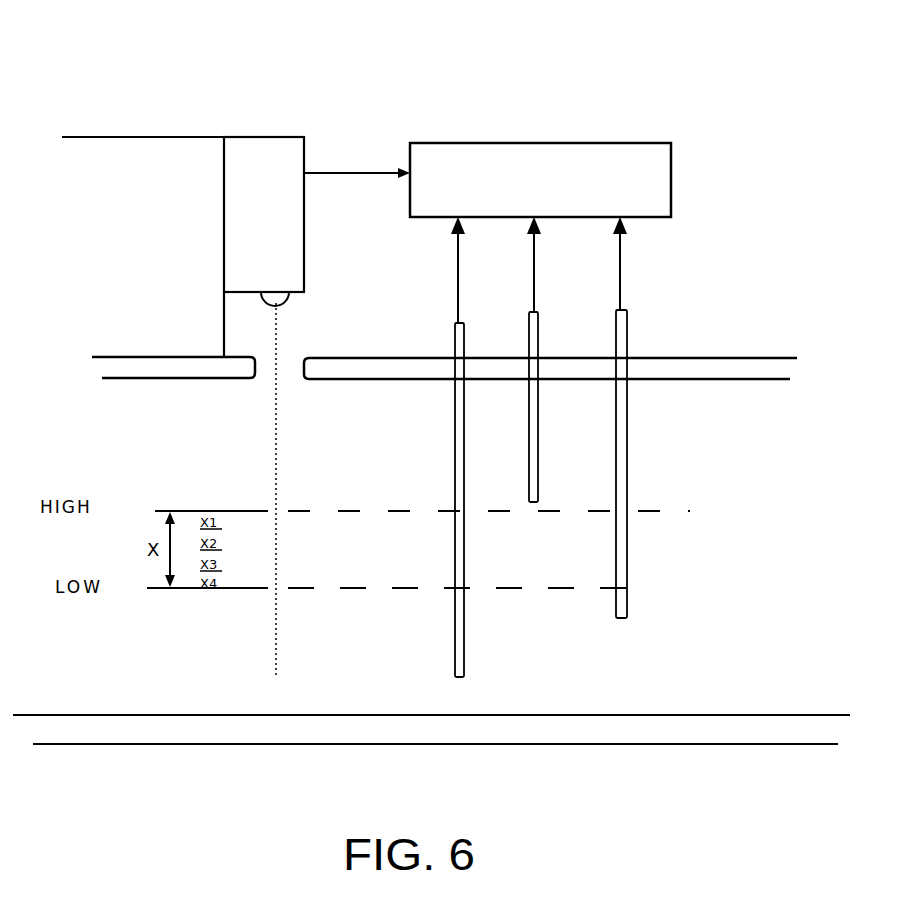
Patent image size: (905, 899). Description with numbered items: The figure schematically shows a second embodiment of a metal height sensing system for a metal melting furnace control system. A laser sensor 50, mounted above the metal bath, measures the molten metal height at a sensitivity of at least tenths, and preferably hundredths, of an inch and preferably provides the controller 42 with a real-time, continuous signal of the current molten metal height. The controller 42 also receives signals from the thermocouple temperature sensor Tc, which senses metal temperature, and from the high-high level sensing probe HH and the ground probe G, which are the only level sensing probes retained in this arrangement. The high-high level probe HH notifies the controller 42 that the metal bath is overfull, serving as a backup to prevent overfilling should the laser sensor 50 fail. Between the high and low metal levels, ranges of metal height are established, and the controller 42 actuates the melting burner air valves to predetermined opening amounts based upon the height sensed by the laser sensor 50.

The laser sensor 50 is at (272, 152).
The controller 42 is at (672, 143).
The temperature sensor (thermocouple) Tc is at (455, 652).
The high-high level sensing probe HH is at (538, 472).
The ground probe G is at (632, 591).